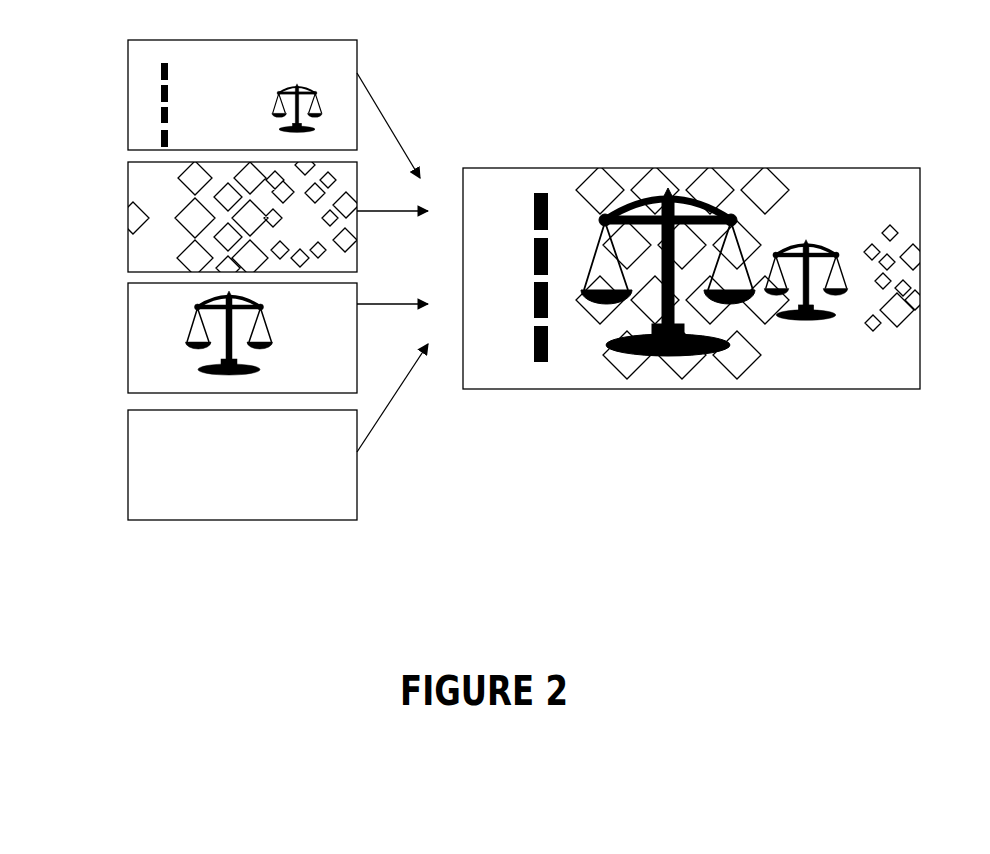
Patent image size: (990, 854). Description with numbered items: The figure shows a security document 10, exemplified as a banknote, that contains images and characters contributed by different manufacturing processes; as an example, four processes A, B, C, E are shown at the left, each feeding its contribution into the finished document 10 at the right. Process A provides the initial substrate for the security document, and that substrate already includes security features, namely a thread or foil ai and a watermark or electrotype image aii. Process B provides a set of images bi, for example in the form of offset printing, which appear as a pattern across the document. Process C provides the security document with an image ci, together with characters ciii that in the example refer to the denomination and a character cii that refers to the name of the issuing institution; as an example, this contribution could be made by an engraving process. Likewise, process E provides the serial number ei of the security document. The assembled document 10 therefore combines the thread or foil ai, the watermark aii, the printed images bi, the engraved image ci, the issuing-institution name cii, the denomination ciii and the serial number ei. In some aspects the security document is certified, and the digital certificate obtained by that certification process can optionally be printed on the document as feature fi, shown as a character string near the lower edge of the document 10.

The banknote 10 is at (731, 166).
The Process A is at (124, 91).
The Process B is at (154, 179).
The Process C is at (154, 297).
The Process E is at (154, 424).
The thread or foil ai is at (170, 72).
The watermark or electrotype image aii is at (281, 97).
The set of images bi is at (937, 232).
The image ci is at (256, 373).
The character referring to the name of the issuing institution cii is at (303, 315).
The characters referring to the denomination ciii is at (150, 348).
The serial number ei is at (300, 500).
The digital certificate feature fi is at (666, 382).